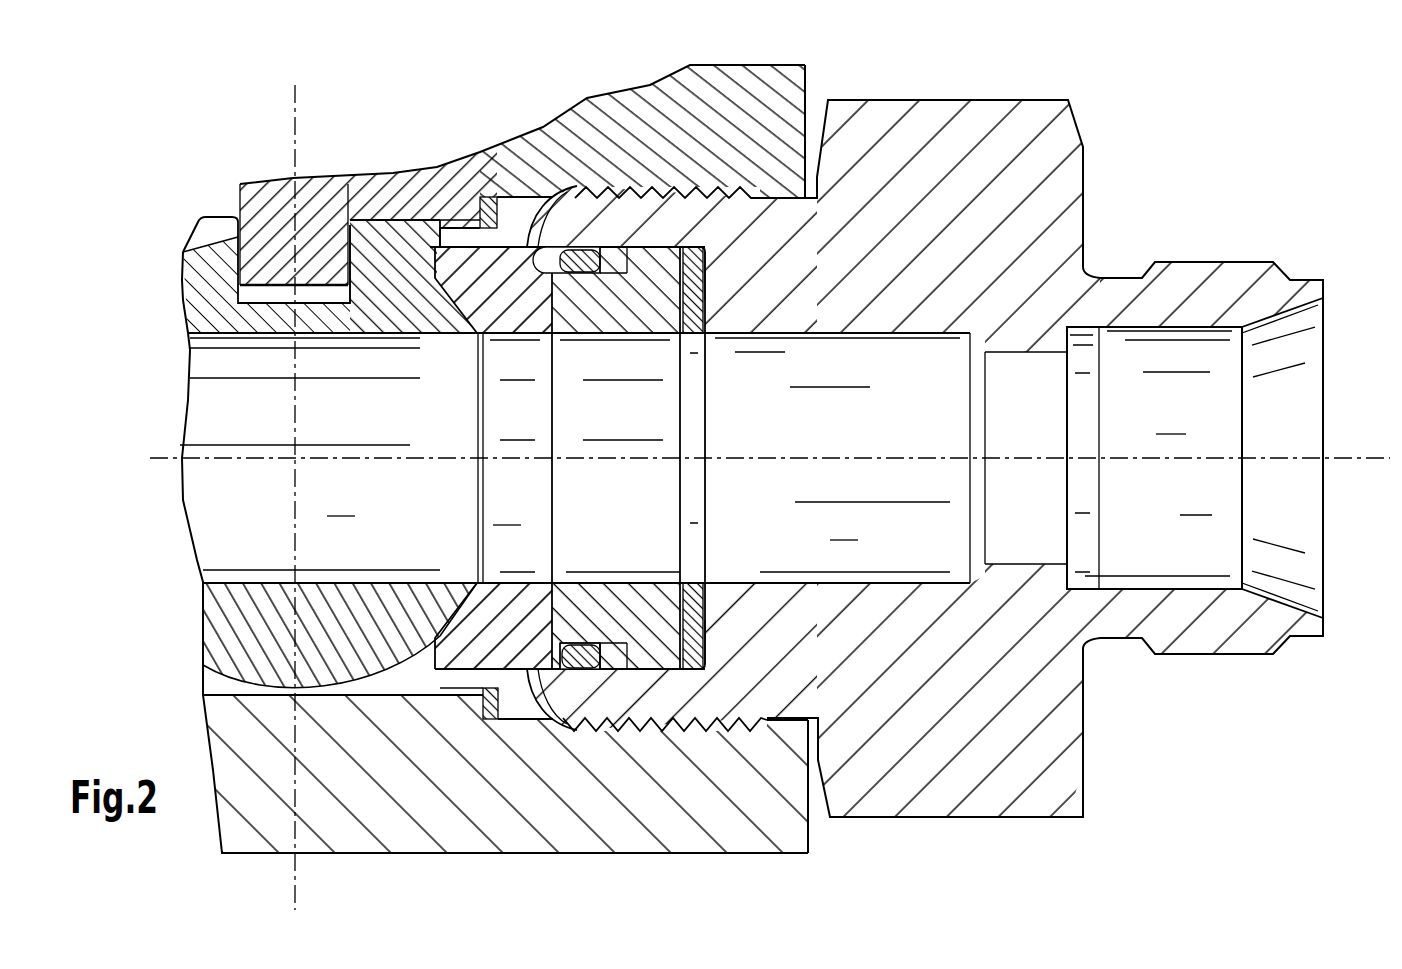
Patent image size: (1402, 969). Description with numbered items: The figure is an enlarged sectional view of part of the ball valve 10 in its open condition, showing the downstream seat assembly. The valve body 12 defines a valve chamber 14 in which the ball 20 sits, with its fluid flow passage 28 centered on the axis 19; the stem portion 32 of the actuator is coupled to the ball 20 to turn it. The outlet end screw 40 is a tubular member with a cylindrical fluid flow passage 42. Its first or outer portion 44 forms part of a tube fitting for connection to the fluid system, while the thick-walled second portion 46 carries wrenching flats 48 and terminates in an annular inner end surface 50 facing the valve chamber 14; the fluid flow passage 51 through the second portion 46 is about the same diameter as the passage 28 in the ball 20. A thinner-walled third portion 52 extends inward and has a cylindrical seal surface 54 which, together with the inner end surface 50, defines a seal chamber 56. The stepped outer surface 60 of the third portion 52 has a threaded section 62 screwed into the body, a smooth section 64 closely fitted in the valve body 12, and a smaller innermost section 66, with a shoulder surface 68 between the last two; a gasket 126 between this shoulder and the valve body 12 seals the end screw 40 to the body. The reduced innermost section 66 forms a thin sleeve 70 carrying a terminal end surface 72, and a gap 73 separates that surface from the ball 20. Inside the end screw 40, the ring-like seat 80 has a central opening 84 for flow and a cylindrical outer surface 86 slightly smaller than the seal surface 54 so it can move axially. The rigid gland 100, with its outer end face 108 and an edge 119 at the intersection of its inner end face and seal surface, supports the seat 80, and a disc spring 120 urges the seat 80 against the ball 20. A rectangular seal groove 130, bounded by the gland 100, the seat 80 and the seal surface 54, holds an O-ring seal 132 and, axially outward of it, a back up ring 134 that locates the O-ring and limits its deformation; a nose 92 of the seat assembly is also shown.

The ball valve 10 is at (178, 705).
The valve body 12 is at (810, 90).
The valve chamber 14 is at (320, 210).
The axis 19 is at (150, 458).
The ball 20 is at (364, 697).
The fluid flow passage 28 is at (575, 458).
The stem portion 32 is at (268, 212).
The outlet end screw 40 is at (1087, 717).
The cylindrical fluid flow passage 42 is at (1195, 458).
The first or outer portion 44 is at (1223, 295).
The second portion 46 is at (1053, 203).
The wrenching flats 48 is at (1000, 100).
The inner end surface 50 is at (698, 322).
The fluid flow passage 51 is at (891, 458).
The third portion 52 is at (660, 220).
The seal surface 54 is at (653, 250).
The seal chamber 56 is at (567, 676).
The stepped outer surface 60 is at (758, 170).
The threaded section 62 is at (720, 193).
The smooth section 64 is at (533, 195).
The innermost section 66 is at (447, 250).
The shoulder surface 68 is at (488, 197).
The sleeve 70 is at (440, 252).
The terminal end surface 72 is at (387, 237).
The gap 73 is at (405, 253).
The seat 80 is at (436, 672).
The central opening 84 is at (567, 458).
The outer surface 86 is at (490, 722).
The nose 92 is at (473, 287).
The gland 100 is at (667, 727).
The outer end face 108 is at (697, 297).
The edge 119 is at (563, 250).
The spring 120 is at (707, 640).
The gasket 126 is at (453, 225).
The seal groove 130 is at (593, 253).
The seal 132 is at (613, 676).
The back up ring 134 is at (654, 676).